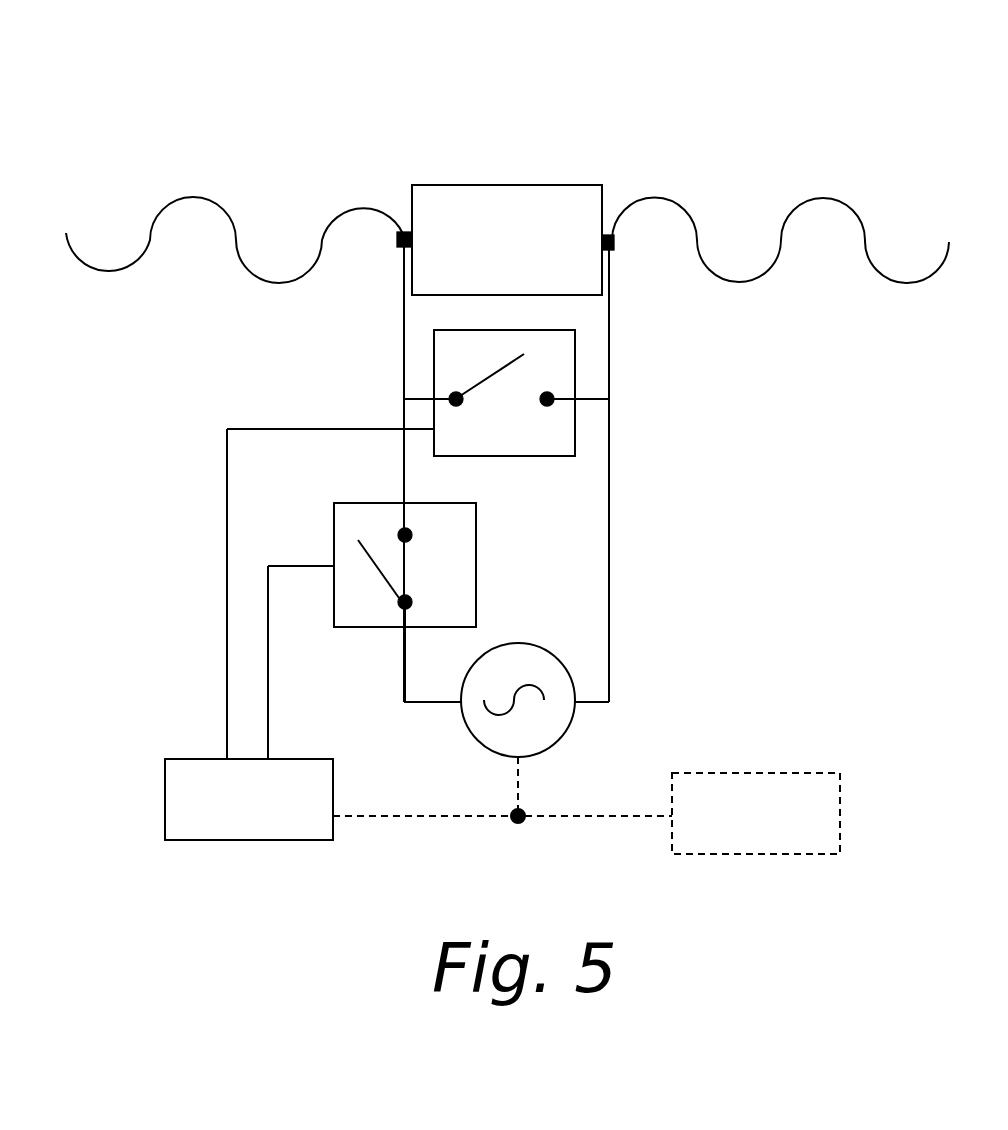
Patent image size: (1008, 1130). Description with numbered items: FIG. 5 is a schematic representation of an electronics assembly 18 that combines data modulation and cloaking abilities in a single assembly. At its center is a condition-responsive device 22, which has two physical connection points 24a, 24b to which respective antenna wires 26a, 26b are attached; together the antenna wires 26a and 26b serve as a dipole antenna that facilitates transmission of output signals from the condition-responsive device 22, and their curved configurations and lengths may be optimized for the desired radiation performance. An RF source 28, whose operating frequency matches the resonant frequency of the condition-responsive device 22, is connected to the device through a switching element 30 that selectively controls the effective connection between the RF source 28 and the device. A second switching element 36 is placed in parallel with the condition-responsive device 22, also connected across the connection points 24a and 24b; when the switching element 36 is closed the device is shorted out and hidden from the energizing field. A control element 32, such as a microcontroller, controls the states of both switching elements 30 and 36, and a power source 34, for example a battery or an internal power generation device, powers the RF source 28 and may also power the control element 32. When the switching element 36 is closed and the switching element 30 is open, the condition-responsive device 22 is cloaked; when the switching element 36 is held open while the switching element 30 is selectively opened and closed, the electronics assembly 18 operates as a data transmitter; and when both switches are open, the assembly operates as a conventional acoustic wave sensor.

The electronics assembly 18 is at (743, 86).
The condition-responsive device 22 is at (512, 185).
The electrical connection point 24a is at (397, 249).
The electrical connection point 24b is at (612, 252).
The antenna wire 26a is at (240, 258).
The antenna wire 26b is at (773, 267).
The RF source 28 is at (465, 723).
The switching element 30 is at (377, 628).
The control element 32 is at (257, 842).
The power source 34 is at (783, 855).
The switching element 36 is at (560, 457).